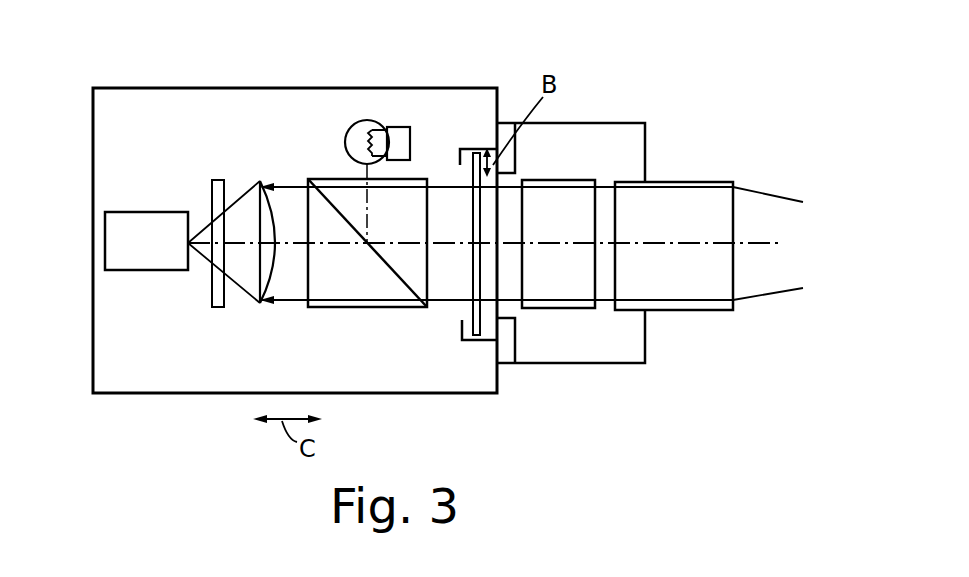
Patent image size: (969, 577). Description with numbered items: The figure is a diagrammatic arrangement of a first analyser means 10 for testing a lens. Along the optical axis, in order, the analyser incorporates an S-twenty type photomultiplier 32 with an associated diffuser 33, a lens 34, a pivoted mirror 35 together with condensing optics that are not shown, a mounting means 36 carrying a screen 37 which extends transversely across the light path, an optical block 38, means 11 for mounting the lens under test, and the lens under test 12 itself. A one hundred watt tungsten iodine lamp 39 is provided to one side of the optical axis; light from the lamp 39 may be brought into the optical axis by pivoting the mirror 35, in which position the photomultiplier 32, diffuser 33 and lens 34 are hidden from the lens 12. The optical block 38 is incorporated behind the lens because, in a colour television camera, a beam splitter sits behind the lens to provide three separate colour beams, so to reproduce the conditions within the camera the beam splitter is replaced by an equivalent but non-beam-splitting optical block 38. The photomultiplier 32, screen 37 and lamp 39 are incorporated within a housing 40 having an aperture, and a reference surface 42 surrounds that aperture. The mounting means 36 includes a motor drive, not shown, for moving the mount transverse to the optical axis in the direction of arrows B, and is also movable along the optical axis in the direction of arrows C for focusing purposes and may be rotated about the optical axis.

The analyser means 10 is at (386, 83).
The means for mounting the lens under test 11 is at (648, 158).
The lens under test 12 is at (700, 290).
The photomultiplier 32 is at (182, 242).
The diffuser 33 is at (210, 307).
The lens 34 is at (260, 305).
The pivoted mirror 35 is at (347, 307).
The mounting means 36 is at (465, 343).
The screen 37 is at (468, 178).
The optical block 38 is at (566, 203).
The tungsten iodine lamp 39 is at (343, 135).
The housing 40 is at (178, 394).
The reference surface 42 is at (515, 337).